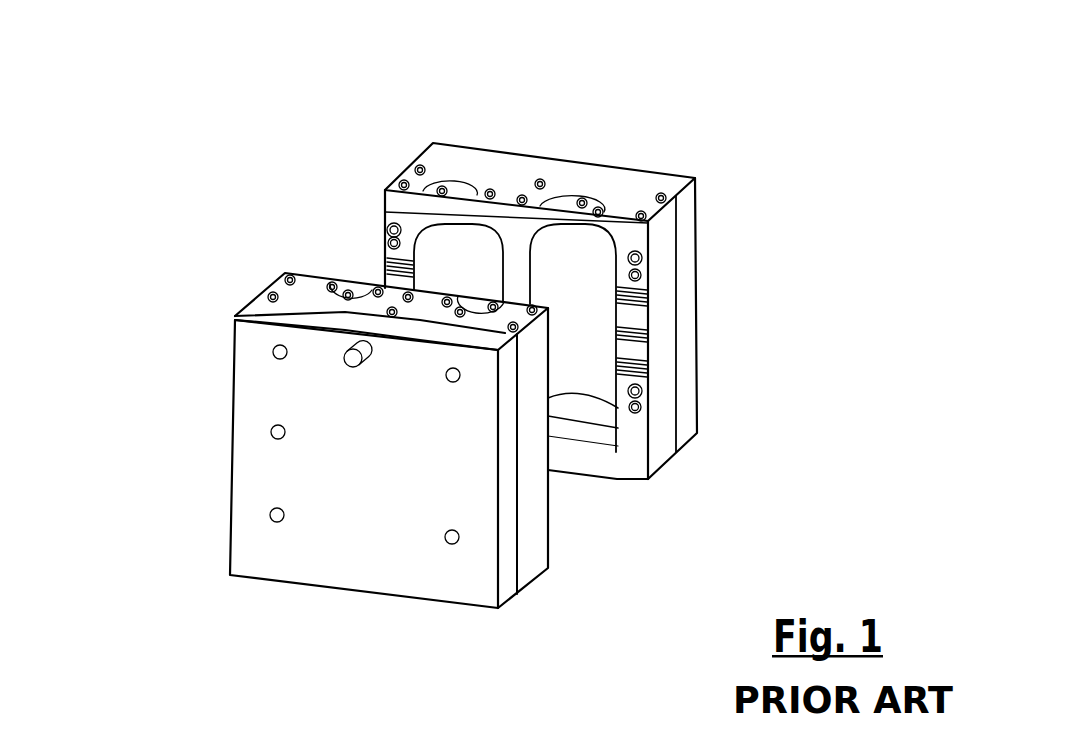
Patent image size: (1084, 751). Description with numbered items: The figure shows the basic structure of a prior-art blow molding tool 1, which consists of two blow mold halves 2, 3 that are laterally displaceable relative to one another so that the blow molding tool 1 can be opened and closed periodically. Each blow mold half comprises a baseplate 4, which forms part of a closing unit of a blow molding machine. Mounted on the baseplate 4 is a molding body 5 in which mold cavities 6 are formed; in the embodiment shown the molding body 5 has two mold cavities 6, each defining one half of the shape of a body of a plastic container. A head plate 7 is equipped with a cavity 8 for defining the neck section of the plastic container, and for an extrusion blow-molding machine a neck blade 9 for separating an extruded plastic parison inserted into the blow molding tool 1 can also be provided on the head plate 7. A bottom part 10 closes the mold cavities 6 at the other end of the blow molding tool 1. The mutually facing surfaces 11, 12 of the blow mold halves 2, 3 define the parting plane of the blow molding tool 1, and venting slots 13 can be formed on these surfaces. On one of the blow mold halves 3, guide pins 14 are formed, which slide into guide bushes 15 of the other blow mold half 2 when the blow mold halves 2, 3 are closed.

The blow molding tool 1 is at (444, 346).
The blow mold half 2 is at (770, 237).
The blow mold half 3 is at (218, 465).
The baseplate 4 is at (687, 298).
The molding body 5 is at (665, 323).
The mold cavities 6 is at (442, 264).
The head plate 7 is at (638, 203).
The cavity 8 is at (468, 203).
The neck blade 9 is at (465, 204).
The bottom part 10 is at (650, 472).
The mutually facing surface 11 is at (549, 379).
The mutually facing surface 12 is at (634, 312).
The venting slots 13 is at (630, 372).
The guide pins 14 is at (555, 343).
The guide bushes 15 is at (636, 409).